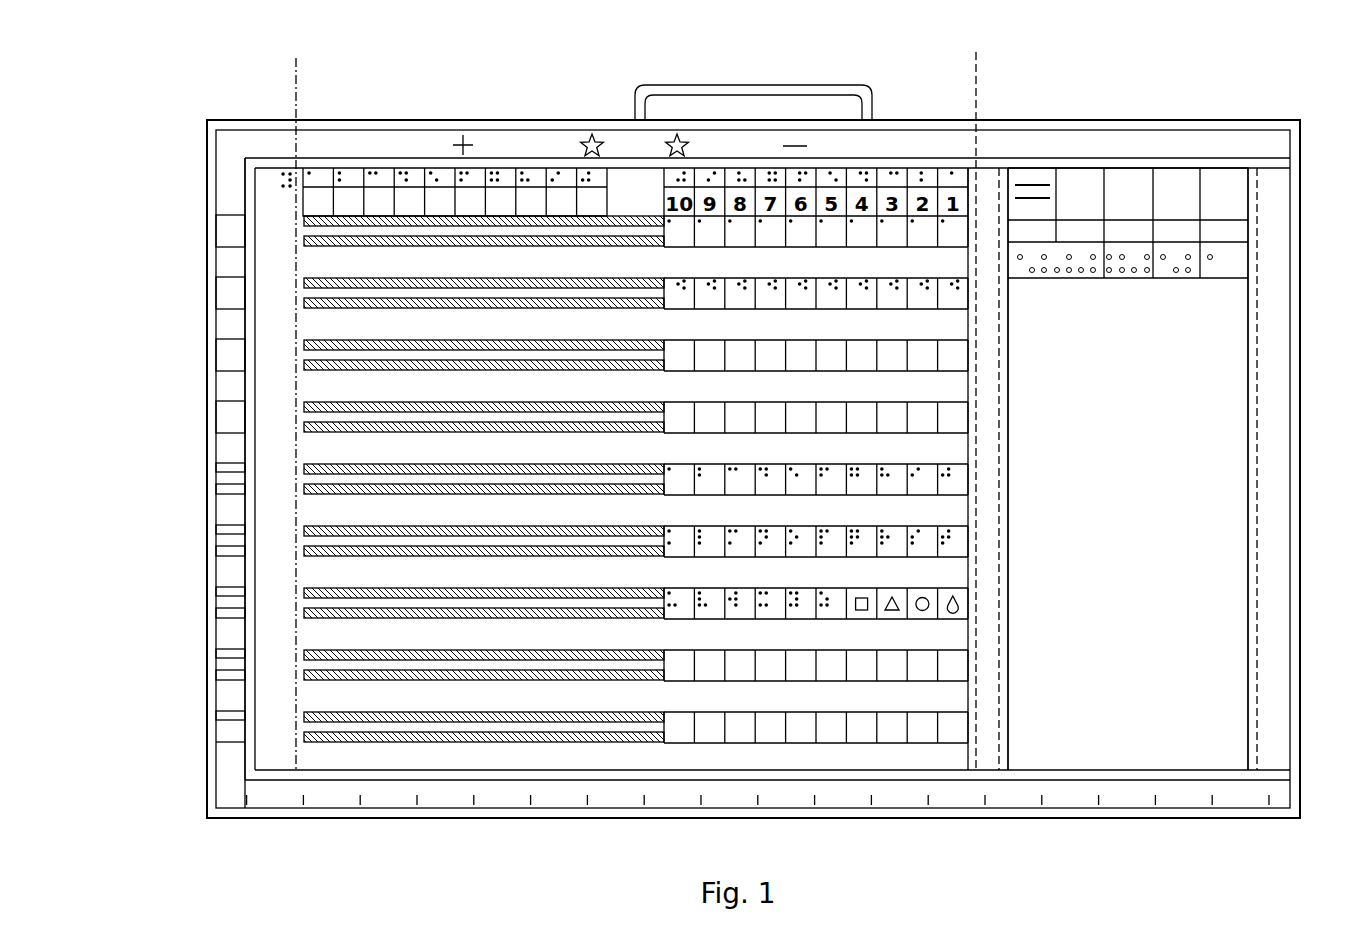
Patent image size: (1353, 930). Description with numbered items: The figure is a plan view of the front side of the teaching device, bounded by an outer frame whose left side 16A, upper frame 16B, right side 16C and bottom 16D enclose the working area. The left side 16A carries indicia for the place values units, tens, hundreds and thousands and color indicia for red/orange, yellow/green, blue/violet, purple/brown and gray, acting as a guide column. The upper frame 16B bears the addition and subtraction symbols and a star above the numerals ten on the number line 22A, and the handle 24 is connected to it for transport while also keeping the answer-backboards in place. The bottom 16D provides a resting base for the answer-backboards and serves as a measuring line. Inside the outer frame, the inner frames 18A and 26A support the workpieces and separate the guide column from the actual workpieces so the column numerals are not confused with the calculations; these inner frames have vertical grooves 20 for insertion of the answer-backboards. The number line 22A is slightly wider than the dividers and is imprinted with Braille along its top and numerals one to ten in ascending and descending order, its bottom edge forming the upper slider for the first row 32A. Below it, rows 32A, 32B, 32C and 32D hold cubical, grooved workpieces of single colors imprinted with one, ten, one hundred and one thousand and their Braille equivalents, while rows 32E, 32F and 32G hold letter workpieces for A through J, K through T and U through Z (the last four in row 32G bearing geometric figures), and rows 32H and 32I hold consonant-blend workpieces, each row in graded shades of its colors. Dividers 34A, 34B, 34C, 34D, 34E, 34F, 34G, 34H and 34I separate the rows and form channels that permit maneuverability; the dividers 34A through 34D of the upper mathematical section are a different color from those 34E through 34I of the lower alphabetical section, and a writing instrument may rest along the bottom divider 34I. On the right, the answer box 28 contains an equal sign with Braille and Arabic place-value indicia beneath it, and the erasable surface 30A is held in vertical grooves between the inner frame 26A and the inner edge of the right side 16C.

The left side of the outer frame 16A is at (227, 215).
The upper frame 16B is at (245, 143).
The outer frame right side 16C is at (1278, 497).
The bottom of the frame 16D is at (774, 808).
The inner frame 18A is at (283, 170).
The vertical grooves 20 is at (634, 399).
The number line 22A is at (347, 177).
The handle 24 is at (738, 91).
The inner frame 26A is at (989, 180).
The answer box 28 is at (1033, 178).
The erasable surface 30A is at (1168, 337).
The row one 32A is at (330, 231).
The row two 32B is at (330, 293).
The row three 32C is at (330, 355).
The row four 32D is at (330, 417).
The row five 32E is at (330, 479).
The row six 32F is at (330, 541).
The row seven 32G is at (330, 603).
The row eight 32H is at (330, 665).
The row nine 32I is at (330, 727).
The divider 34A is at (337, 261).
The divider 34B is at (337, 323).
The divider 34C is at (337, 385).
The divider 34D is at (337, 447).
The divider 34E is at (337, 509).
The divider 34F is at (337, 571).
The divider 34G is at (337, 633).
The divider 34H is at (337, 695).
The bottom divider 34I is at (337, 757).